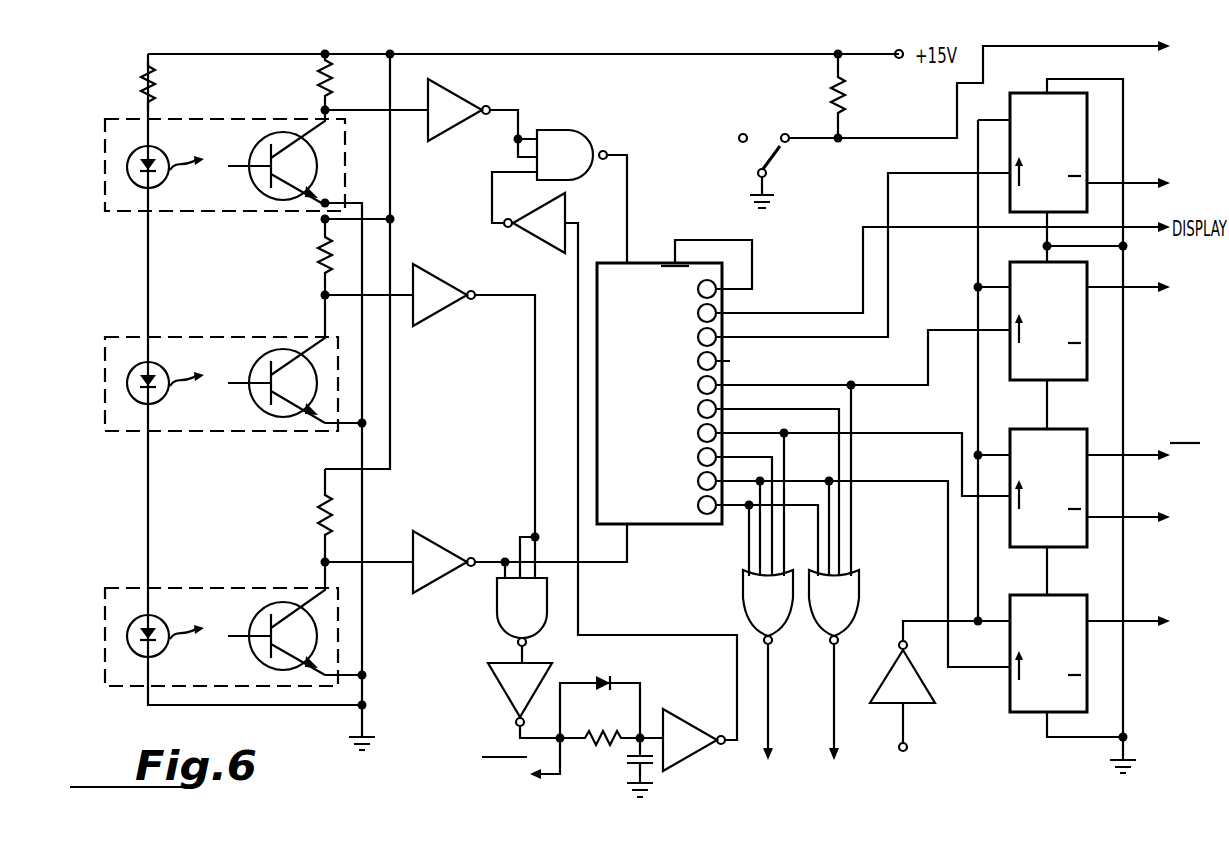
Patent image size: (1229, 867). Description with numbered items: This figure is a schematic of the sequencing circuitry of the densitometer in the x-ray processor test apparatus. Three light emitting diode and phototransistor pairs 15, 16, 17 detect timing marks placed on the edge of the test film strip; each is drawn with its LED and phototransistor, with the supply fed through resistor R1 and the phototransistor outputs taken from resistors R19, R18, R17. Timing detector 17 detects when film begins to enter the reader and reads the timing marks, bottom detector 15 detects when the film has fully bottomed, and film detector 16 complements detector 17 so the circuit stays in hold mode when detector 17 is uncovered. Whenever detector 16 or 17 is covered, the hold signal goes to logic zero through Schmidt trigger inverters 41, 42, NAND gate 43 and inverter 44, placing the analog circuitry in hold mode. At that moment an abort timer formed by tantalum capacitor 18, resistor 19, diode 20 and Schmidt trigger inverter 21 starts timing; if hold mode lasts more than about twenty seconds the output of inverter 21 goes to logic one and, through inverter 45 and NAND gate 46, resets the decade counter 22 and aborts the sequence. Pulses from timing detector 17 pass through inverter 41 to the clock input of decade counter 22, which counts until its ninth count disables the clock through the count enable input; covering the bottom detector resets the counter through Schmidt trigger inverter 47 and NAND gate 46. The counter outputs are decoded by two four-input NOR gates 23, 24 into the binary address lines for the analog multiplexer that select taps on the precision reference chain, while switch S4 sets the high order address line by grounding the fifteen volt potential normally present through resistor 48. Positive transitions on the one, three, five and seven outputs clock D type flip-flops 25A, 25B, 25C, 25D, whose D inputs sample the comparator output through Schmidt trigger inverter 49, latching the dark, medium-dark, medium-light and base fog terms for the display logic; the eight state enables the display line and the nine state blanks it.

The light emitting diode and phototransistor pair 15 is at (104, 166).
The light emitting diode and phototransistor pair 16 is at (104, 366).
The light emitting diode and phototransistor pair 17 is at (104, 606).
The tantalum capacitor 18 is at (634, 760).
The resistor 19 is at (600, 735).
The diode 20 is at (612, 680).
The Schmidt trigger inverter 21 is at (672, 735).
The decade counter 22 is at (670, 400).
The four-input NOR gate 23 is at (754, 590).
The four-input NOR gate 24 is at (847, 600).
The D type flip-flop 25A is at (1068, 664).
The D type flip-flop 25B is at (1068, 497).
The D type flip-flop 25C is at (1068, 330).
The D type flip-flop 25D is at (1068, 162).
The Schmidt trigger inverter 41 is at (438, 563).
The Schmidt trigger inverter 42 is at (433, 298).
The NAND gate 43 is at (512, 603).
The inverter 44 is at (512, 680).
The inverter 45 is at (548, 222).
The NAND gate 46 is at (563, 148).
The Schmidt trigger inverter 47 is at (450, 108).
The resistor 48 is at (836, 86).
The Schmidt trigger inverter 49 is at (898, 690).
The resistor R1 is at (143, 80).
The resistor R17 is at (318, 494).
The resistor R18 is at (318, 258).
The resistor R19 is at (318, 78).
The switch S4 is at (762, 150).